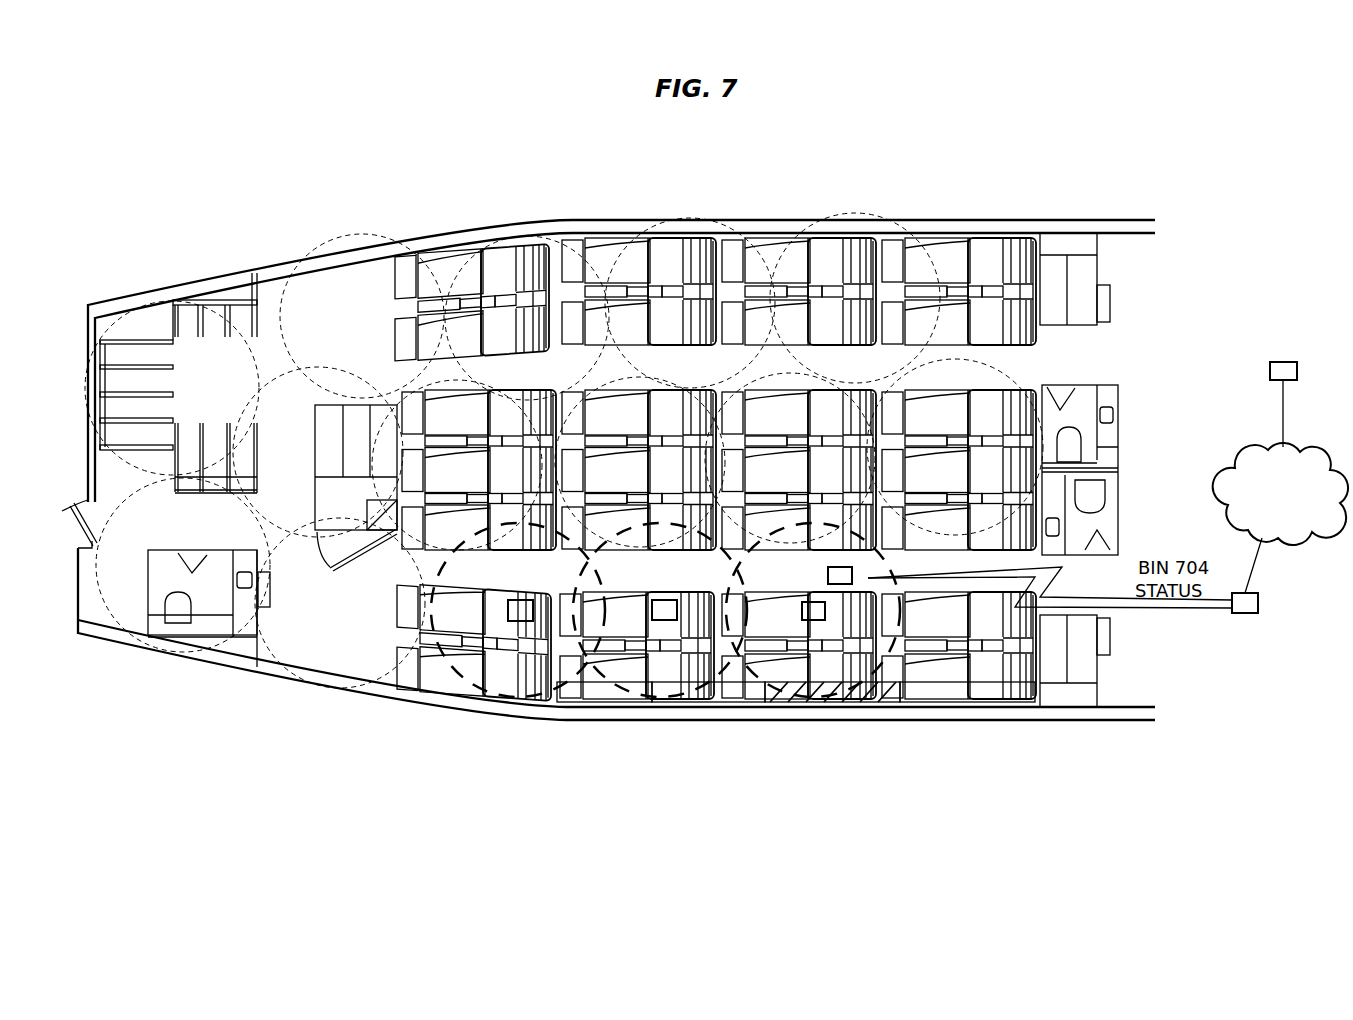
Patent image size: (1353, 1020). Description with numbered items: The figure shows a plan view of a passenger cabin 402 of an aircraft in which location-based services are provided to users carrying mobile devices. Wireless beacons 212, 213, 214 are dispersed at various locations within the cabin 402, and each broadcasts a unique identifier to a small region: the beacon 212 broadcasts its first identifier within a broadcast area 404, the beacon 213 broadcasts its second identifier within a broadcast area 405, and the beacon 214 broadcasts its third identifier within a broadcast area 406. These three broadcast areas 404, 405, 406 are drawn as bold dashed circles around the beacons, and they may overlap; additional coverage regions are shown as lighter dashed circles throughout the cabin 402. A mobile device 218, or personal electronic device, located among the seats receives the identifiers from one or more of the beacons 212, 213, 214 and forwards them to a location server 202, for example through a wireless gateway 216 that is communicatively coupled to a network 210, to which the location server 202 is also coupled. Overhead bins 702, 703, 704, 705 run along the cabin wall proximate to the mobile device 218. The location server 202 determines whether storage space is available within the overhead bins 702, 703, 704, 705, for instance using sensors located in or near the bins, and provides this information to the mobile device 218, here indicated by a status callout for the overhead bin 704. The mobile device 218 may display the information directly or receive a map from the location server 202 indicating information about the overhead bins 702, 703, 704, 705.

The passenger cabin 402 is at (316, 178).
The location server 202 is at (1284, 362).
The network 210 is at (1280, 494).
The wireless gateway 216 is at (1258, 603).
The wireless beacon 212 is at (520, 600).
The wireless beacon 213 is at (664, 600).
The wireless beacon 214 is at (802, 611).
The mobile device 218 is at (827, 575).
The broadcast area 404 is at (456, 680).
The broadcast area 405 is at (630, 693).
The broadcast area 406 is at (763, 690).
The overhead bin 702 is at (588, 693).
The overhead bin 703 is at (728, 692).
The overhead bin 704 is at (855, 690).
The overhead bin 705 is at (947, 690).